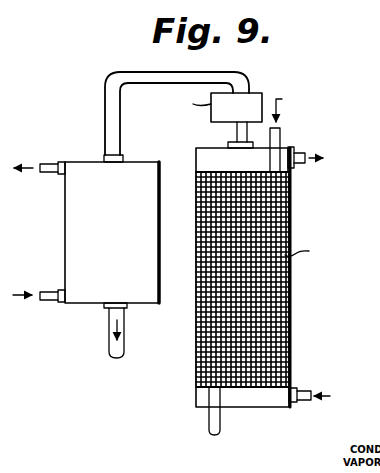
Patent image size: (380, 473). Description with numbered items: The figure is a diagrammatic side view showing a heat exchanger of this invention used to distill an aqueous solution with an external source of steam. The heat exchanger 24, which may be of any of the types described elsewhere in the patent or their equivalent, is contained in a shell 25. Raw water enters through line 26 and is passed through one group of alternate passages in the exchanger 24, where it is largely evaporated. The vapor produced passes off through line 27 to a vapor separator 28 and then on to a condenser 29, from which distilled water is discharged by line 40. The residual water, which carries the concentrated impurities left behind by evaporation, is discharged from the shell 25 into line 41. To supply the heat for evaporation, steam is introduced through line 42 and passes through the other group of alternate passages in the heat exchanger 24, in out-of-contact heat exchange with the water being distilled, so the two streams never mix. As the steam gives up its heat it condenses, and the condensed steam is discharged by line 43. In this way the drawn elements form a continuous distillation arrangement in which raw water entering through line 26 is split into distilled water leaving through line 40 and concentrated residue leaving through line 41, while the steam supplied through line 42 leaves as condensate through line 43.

The heat exchanger 24 is at (278, 315).
The shell 25 is at (268, 404).
The raw water line 26 is at (307, 390).
The vapor line 27 is at (237, 132).
The vapor separator 28 is at (248, 102).
The condenser 29 is at (88, 172).
The distilled water line 40 is at (115, 319).
The residual water line 41 is at (301, 165).
The steam line 42 is at (281, 133).
The condensed steam line 43 is at (213, 422).